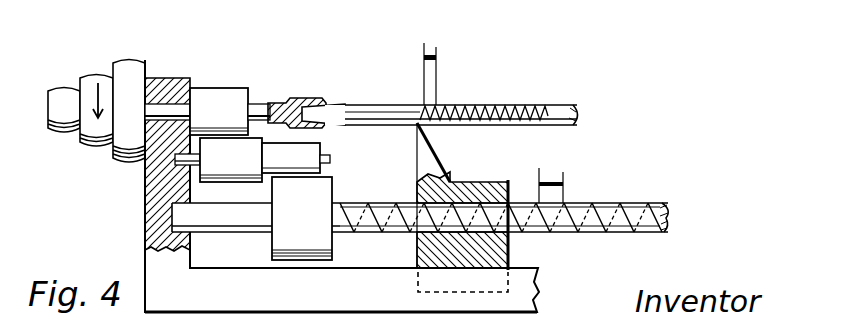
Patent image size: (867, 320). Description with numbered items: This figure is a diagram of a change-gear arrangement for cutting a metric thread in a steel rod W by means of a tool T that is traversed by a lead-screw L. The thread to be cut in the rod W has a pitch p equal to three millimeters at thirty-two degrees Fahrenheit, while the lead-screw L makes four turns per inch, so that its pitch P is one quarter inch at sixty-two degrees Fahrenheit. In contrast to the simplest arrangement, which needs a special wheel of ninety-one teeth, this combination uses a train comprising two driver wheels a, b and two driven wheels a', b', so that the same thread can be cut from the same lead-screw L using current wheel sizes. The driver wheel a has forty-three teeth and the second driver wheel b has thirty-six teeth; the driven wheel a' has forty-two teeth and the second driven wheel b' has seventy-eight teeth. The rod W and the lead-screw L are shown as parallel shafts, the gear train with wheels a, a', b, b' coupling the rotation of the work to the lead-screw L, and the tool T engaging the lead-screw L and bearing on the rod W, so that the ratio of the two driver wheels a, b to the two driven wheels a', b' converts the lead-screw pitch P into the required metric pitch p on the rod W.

The steel rod W is at (368, 110).
The lead-screw L is at (377, 203).
The tool T is at (428, 164).
The pitch p is at (436, 47).
The pitch P is at (547, 172).
The driver wheel a is at (219, 111).
The driven wheel a' is at (218, 160).
The driver wheel b is at (296, 158).
The driven wheel b' is at (302, 218).